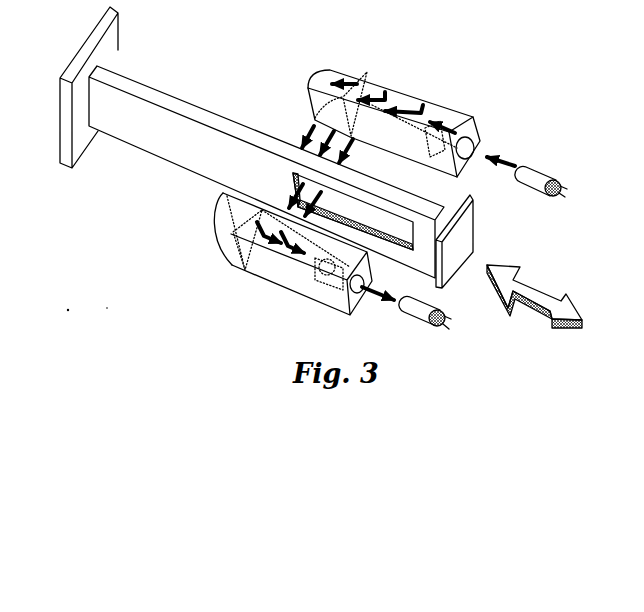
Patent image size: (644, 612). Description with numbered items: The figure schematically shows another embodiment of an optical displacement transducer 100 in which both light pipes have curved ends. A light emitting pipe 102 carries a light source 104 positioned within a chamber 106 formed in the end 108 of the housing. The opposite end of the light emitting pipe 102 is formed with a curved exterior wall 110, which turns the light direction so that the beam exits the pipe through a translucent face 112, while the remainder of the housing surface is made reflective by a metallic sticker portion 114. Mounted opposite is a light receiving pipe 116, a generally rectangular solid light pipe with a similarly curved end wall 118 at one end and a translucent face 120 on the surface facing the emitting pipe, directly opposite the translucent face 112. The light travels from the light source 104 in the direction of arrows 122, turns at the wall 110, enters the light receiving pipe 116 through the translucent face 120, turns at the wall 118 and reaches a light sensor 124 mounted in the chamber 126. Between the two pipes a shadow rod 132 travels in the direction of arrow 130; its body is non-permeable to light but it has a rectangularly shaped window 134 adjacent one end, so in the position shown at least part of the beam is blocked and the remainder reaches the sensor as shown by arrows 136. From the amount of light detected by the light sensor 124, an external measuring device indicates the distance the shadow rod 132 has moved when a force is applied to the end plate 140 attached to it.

The optical transducer 100 is at (329, 169).
The light emitting pipe 102 is at (390, 84).
The light source 104 is at (557, 168).
The chamber 106 is at (530, 137).
The end of the housing 108 is at (502, 134).
The curved exterior wall 110 is at (408, 107).
The translucent face 112 is at (357, 124).
The metallic sticker portion 114 is at (472, 165).
The light receiving pipe 116 is at (273, 254).
The curved end wall 118 is at (203, 229).
The translucent face 120 is at (243, 196).
The arrows 122 is at (426, 90).
The light sensor 124 is at (442, 306).
The chamber 126 is at (376, 313).
The arrow 130 is at (540, 283).
The shadow rod 132 is at (266, 166).
The rectangularly shaped window 134 is at (364, 211).
The arrows 136 is at (353, 153).
The end plate 140 is at (299, 147).